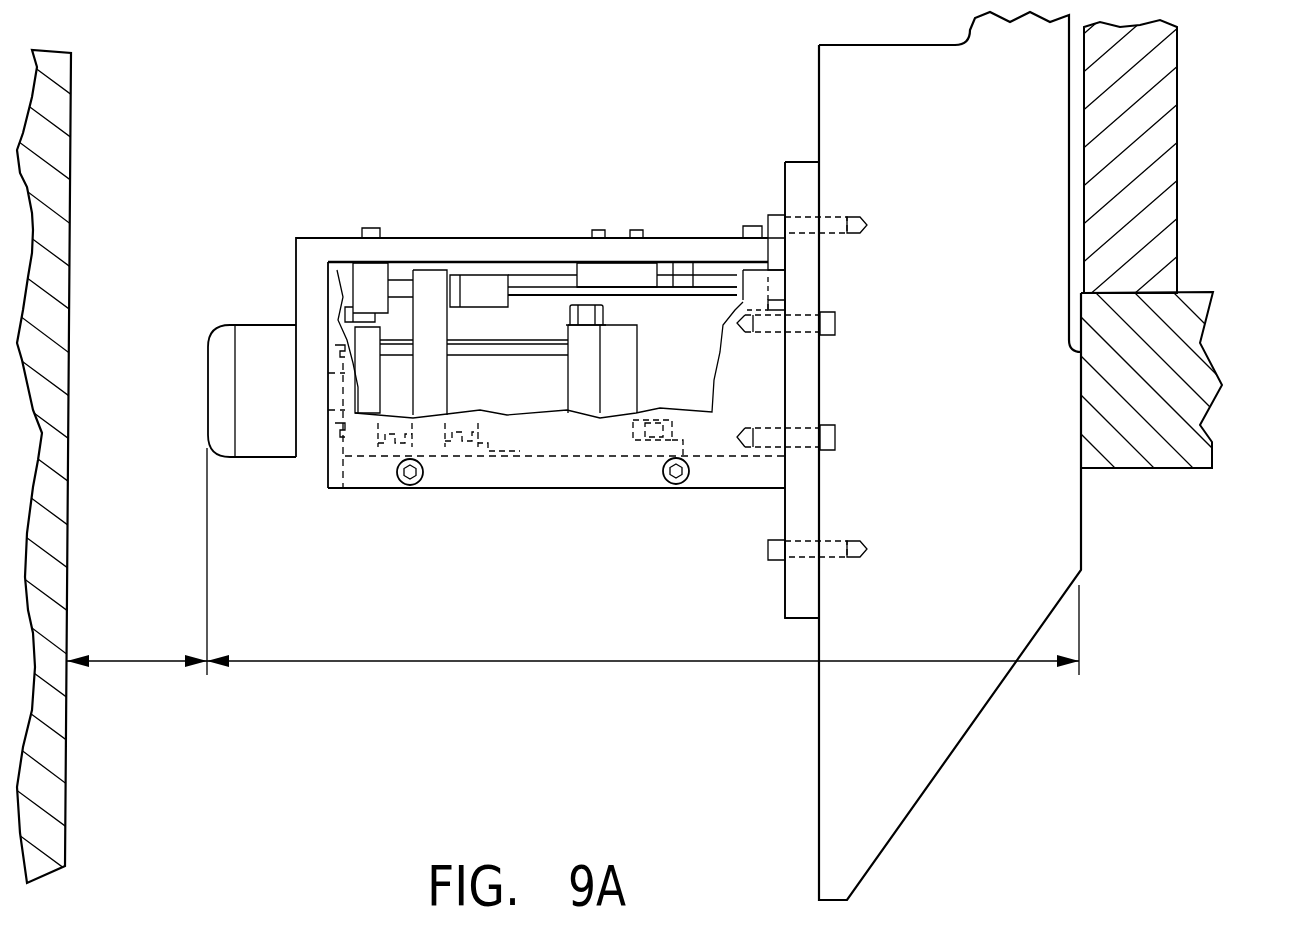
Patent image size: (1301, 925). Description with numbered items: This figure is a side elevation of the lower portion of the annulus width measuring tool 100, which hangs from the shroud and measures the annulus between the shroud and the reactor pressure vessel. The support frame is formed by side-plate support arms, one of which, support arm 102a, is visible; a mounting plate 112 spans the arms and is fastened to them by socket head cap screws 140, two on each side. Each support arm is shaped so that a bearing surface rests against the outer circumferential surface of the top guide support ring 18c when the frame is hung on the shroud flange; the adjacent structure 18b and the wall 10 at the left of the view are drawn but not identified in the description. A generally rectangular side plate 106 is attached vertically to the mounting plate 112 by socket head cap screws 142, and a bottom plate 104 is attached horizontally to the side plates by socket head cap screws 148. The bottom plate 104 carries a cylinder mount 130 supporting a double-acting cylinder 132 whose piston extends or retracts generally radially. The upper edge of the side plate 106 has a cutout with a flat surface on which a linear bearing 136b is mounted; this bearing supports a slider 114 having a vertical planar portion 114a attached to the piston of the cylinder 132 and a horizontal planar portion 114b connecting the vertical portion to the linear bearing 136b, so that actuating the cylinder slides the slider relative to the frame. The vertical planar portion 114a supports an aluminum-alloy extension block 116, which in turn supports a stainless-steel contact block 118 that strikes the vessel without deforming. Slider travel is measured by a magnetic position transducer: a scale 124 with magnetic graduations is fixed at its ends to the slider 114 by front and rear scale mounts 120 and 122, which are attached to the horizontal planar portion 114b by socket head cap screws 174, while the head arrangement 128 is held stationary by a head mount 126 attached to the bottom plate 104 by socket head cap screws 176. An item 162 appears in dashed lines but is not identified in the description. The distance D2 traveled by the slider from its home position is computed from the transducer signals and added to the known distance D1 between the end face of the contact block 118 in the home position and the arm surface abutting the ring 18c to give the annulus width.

The wall / workpiece 10 is at (71, 152).
The support member 18b is at (1178, 162).
The top guide support ring 18c is at (1135, 470).
The measuring tool 100 is at (543, 145).
The support arm 102a is at (915, 758).
The bottom plate 104 is at (572, 490).
The side plate 106 is at (713, 433).
The mounting plate 112 is at (803, 173).
The slider 114 is at (493, 237).
The vertical planar portion 114a is at (310, 265).
The horizontal planar portion 114b is at (567, 245).
The extension block 116 is at (262, 325).
The contact block 118 is at (208, 355).
The front scale mount 120 is at (688, 262).
The rear scale mount 122 is at (365, 282).
The scale 124 is at (668, 237).
The head mount 126 is at (430, 400).
The head arrangement 128 is at (480, 285).
The cylinder mount 130 is at (625, 357).
The double-acting cylinder 132 is at (497, 355).
The linear bearing 136b is at (618, 278).
The socket head cap screws 140 is at (830, 236).
The socket head cap screws 142 is at (837, 322).
The socket head cap screws 148 is at (416, 488).
The sensor 162 is at (672, 420).
The socket head cap screws 174 is at (753, 222).
The socket head cap screws 176 is at (392, 438).
The known distance D1 is at (512, 666).
The measured distance D2 is at (128, 663).